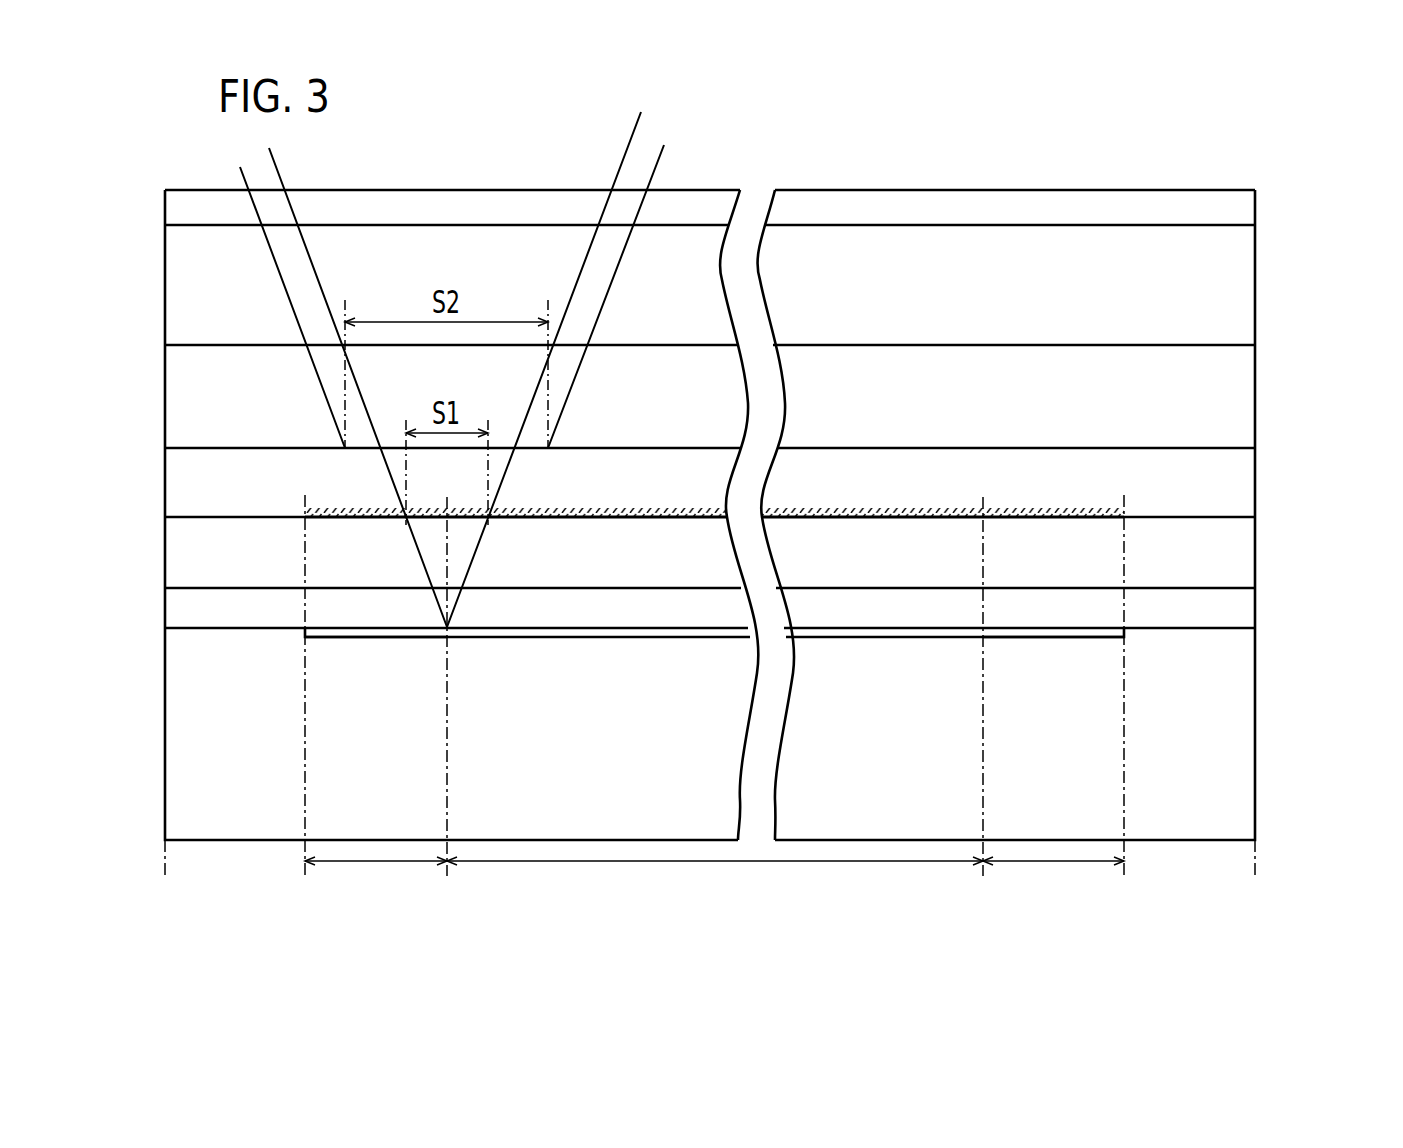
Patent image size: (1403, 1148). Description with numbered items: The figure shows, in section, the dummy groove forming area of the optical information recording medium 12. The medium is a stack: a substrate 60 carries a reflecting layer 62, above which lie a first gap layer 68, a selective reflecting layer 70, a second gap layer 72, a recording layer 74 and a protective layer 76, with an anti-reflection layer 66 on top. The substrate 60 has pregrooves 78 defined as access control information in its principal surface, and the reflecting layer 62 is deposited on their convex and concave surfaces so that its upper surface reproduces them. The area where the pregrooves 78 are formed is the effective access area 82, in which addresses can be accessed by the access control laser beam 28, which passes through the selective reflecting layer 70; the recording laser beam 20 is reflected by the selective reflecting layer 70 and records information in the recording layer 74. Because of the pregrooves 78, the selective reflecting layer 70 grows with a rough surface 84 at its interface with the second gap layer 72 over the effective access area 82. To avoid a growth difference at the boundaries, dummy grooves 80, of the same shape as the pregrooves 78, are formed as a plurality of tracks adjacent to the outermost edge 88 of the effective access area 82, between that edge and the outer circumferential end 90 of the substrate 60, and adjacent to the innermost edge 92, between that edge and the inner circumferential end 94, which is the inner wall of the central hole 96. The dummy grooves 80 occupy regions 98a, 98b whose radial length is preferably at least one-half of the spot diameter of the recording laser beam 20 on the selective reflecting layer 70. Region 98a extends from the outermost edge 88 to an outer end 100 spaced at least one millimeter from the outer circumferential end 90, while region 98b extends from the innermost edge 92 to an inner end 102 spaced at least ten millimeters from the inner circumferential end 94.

The optical information recording medium 12 is at (962, 180).
The recording laser beam 20 is at (654, 160).
The access control laser beam 28 is at (637, 131).
The substrate 60 is at (1245, 762).
The reflecting layer 62 is at (1232, 636).
The anti-reflection layer 66 is at (1127, 204).
The first gap layer 68 is at (1247, 606).
The selective reflecting layer 70 is at (1247, 540).
The second gap layer 72 is at (1247, 480).
The recording layer 74 is at (1247, 384).
The protective layer 76 is at (1247, 290).
The pregrooves 78 is at (537, 640).
The dummy grooves 80 is at (370, 640).
The effective access area 82 is at (675, 862).
The rough surface 84 is at (334, 514).
The outermost edge of the effective access area 88 is at (443, 702).
The outer circumferential end of the substrate 90 is at (165, 874).
The innermost edge of the effective access area 92 is at (976, 702).
The inner circumferential end of the substrate 94 is at (1263, 874).
The central hole 96 is at (1338, 808).
The region where the dummy grooves are formed (outer) 98a is at (378, 862).
The region where the dummy grooves are formed (inner) 98b is at (1046, 862).
The outer end of region 98a 100 is at (306, 701).
The inner end of region 98b 102 is at (1119, 701).